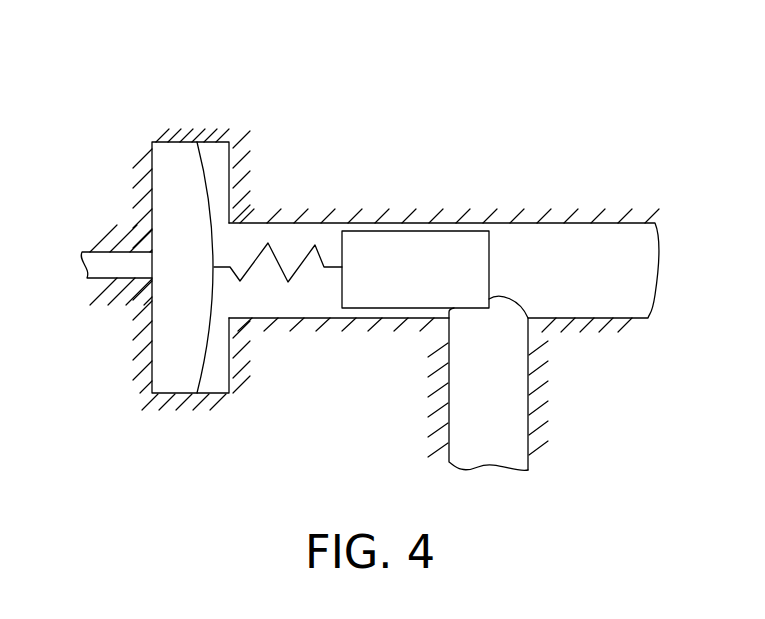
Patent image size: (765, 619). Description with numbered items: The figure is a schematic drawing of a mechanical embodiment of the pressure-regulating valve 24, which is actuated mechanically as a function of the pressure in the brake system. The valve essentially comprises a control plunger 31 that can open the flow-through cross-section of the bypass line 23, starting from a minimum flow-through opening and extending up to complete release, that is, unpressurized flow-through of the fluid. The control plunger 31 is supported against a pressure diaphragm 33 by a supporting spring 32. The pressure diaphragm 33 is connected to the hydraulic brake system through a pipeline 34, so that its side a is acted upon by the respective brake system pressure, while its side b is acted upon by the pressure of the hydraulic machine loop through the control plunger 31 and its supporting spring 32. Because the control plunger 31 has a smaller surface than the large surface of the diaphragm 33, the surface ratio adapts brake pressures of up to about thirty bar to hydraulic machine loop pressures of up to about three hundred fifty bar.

The bypass line 23 is at (531, 237).
The pressure-regulating valve 24 is at (478, 179).
The control plunger 31 is at (370, 243).
The supporting spring 32 is at (280, 258).
The pressure diaphragm 33 is at (216, 157).
The pipeline 34 is at (100, 256).
The side a of the pressure diaphragm a is at (167, 157).
The side b of the pressure diaphragm b is at (213, 141).